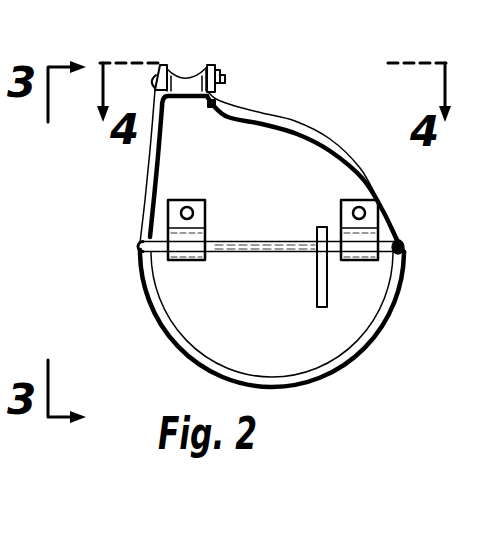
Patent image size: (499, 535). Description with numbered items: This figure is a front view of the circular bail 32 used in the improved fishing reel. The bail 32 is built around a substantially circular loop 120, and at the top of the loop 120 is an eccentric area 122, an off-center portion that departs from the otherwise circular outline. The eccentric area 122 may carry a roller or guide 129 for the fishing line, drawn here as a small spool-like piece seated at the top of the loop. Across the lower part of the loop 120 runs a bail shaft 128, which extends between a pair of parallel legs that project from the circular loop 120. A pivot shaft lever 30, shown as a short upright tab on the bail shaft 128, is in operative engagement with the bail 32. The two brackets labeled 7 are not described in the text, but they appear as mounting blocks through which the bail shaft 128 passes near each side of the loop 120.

The clamp bracket 7 is at (178, 200).
The pivot shaft lever 30 is at (320, 227).
The circular bail 32 is at (367, 359).
The circular loop 120 is at (316, 253).
The eccentric area 122 is at (236, 103).
The bail shaft 128 is at (232, 249).
The roller or guide 129 is at (184, 83).